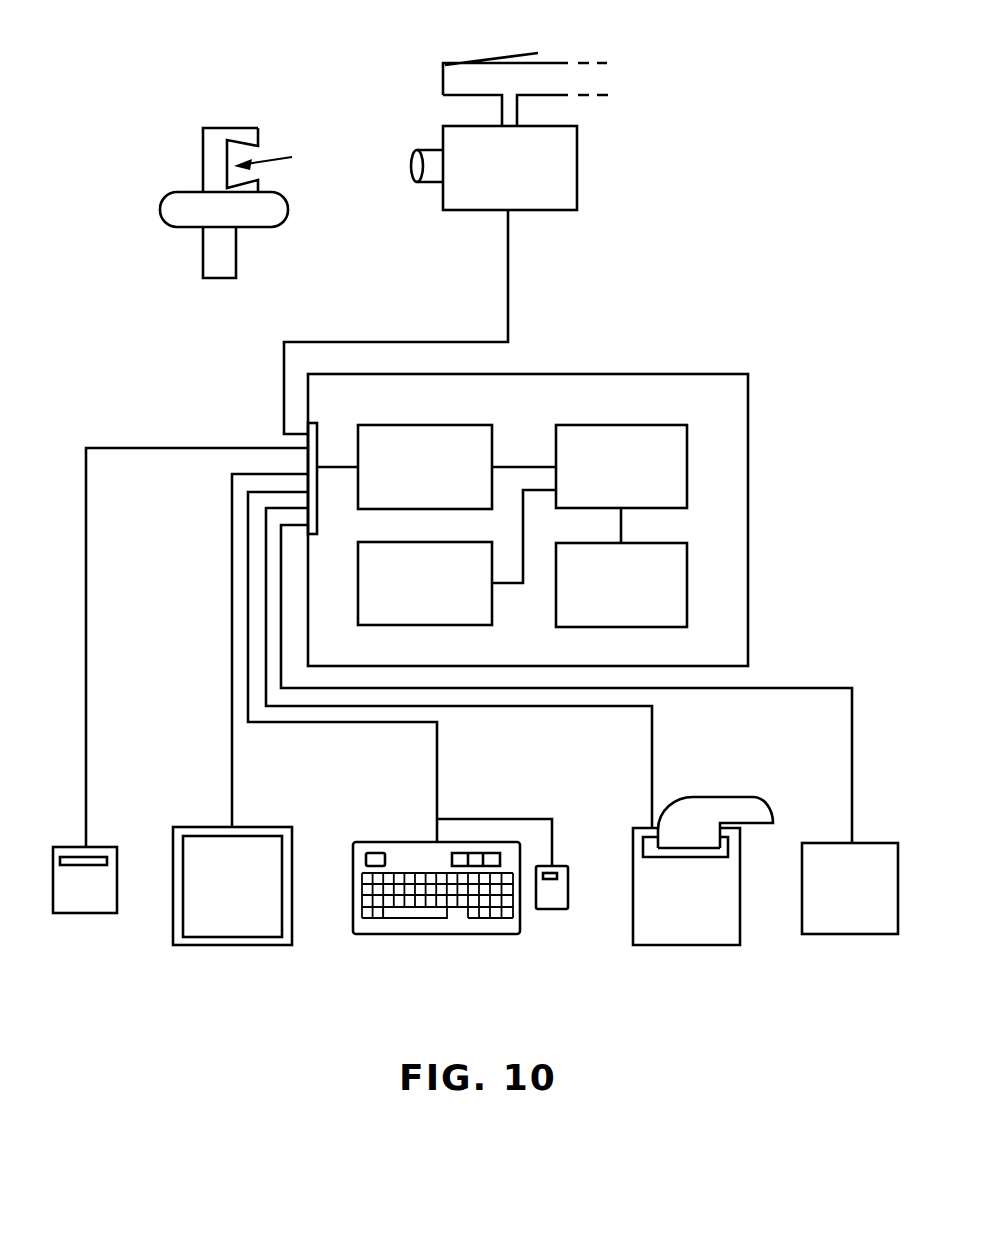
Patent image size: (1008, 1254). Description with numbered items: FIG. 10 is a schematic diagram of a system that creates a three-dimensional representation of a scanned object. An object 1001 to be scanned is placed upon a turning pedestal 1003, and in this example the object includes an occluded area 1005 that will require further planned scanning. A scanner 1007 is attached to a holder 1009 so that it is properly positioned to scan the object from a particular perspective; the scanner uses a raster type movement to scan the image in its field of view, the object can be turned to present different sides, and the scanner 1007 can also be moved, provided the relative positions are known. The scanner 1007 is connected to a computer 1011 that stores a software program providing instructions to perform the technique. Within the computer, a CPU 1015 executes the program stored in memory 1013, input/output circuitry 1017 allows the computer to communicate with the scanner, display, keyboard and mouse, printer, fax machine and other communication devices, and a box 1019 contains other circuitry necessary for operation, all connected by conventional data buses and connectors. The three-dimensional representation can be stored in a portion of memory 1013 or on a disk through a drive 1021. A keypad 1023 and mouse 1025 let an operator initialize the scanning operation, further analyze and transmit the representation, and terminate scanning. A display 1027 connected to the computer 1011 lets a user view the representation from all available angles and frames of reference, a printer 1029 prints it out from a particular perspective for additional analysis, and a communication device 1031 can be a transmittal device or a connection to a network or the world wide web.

The object 1001 is at (232, 127).
The turning pedestal 1003 is at (237, 249).
The occluded area 1005 is at (295, 157).
The scanner 1007 is at (540, 181).
The holder 1009 is at (487, 72).
The computer 1011 is at (748, 483).
The memory 1013 is at (393, 613).
The CPU 1015 is at (589, 497).
The input/output circuitry 1017 is at (393, 495).
The box 1019 is at (589, 612).
The drive 1021 is at (90, 915).
The keypad 1023 is at (450, 935).
The mouse 1025 is at (552, 910).
The display 1027 is at (238, 945).
The printer 1029 is at (692, 946).
The communication device 1031 is at (863, 935).